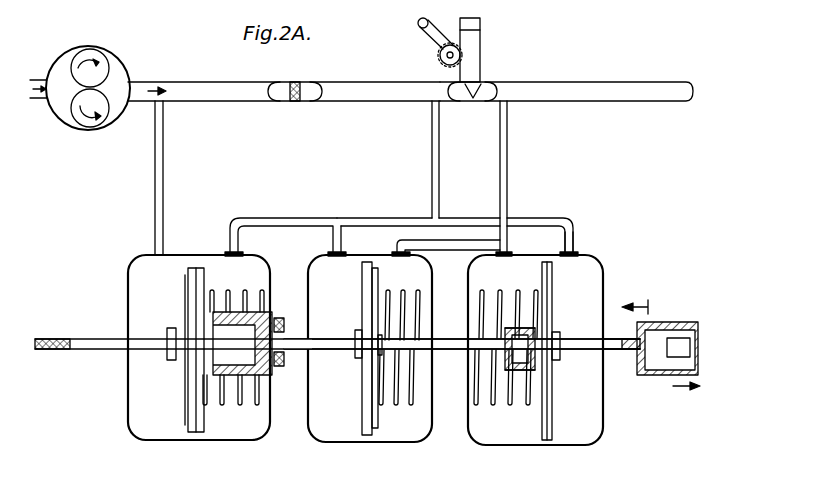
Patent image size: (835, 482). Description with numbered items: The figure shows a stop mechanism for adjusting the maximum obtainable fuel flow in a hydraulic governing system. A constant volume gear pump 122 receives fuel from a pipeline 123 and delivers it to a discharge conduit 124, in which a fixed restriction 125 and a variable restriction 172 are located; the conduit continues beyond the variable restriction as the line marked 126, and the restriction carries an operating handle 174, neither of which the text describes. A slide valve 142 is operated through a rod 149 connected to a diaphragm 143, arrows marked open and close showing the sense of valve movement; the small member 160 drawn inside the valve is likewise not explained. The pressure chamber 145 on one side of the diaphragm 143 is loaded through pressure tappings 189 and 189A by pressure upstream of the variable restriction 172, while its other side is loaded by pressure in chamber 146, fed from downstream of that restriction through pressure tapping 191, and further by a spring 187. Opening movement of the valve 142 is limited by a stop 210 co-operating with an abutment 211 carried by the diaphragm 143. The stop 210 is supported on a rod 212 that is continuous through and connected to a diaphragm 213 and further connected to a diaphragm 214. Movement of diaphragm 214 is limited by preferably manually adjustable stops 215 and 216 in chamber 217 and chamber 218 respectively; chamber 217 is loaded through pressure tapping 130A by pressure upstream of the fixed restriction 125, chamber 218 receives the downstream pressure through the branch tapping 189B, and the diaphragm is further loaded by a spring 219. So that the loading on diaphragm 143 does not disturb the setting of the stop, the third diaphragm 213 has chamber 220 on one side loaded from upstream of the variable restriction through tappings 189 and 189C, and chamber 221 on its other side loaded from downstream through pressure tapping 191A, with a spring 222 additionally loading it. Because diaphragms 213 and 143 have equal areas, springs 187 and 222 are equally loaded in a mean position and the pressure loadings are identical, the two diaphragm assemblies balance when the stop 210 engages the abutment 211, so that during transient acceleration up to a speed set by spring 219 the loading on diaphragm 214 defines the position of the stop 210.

The constant volume gear pump 122 is at (106, 64).
The pipeline 123 is at (44, 74).
The discharge conduit 124 is at (205, 88).
The fixed restriction 125 is at (299, 81).
The pressure line extension 126 is at (594, 88).
The pressure tapping 130A is at (155, 179).
The variable restriction 172 is at (490, 94).
The valve handle 174 is at (428, 40).
The pressure tapping 189 is at (432, 148).
The pressure tapping 191 is at (507, 125).
The pressure tapping 189B is at (241, 217).
The pressure tapping 189C is at (331, 238).
The pressure tapping 189A is at (575, 221).
The pressure chamber 145 is at (585, 268).
The pressure tapping 191A is at (448, 240).
The chamber 217 is at (142, 262).
The chamber 218 is at (222, 262).
The diaphragm 214 is at (192, 408).
The spring 219 is at (239, 410).
The stop 216 is at (270, 320).
The stop 215 is at (116, 346).
The chamber 220 is at (322, 412).
The spring 222 is at (391, 410).
The diaphragm 213 is at (366, 412).
The chamber 221 is at (392, 262).
The rod 212 is at (452, 350).
The chamber 146 is at (491, 427).
The spring 187 is at (519, 296).
The diaphragm 143 is at (549, 292).
The abutment 211 is at (530, 360).
The stop 210 is at (515, 372).
The rod 149 is at (578, 350).
The slide valve 142 is at (652, 322).
The valve member 160 is at (680, 358).